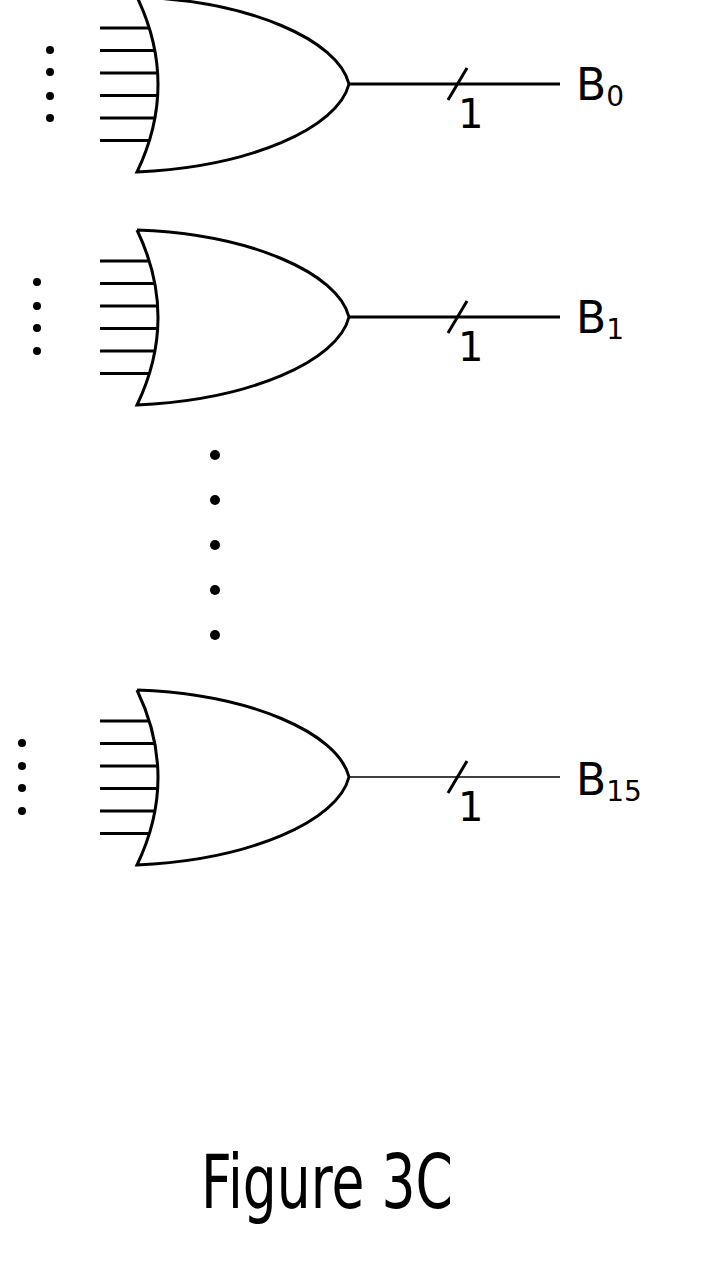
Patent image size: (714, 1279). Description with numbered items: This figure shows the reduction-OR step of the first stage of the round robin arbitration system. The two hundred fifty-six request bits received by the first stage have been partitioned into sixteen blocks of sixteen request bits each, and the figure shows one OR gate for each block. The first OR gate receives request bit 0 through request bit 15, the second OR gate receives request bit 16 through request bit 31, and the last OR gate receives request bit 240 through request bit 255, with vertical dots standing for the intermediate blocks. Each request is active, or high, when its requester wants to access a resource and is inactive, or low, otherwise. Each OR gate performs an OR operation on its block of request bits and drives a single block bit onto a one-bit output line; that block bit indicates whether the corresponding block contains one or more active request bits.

The request bit R0 0 is at (93, 29).
The request bit R15 15 is at (93, 158).
The request bit R16 16 is at (86, 259).
The request bit R31 31 is at (86, 391).
The request bit R240 240 is at (80, 719).
The request bit R255 255 is at (80, 852).